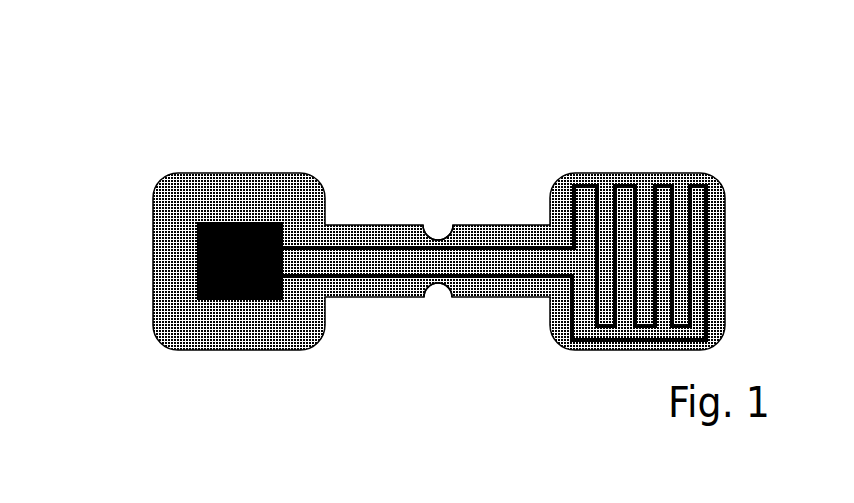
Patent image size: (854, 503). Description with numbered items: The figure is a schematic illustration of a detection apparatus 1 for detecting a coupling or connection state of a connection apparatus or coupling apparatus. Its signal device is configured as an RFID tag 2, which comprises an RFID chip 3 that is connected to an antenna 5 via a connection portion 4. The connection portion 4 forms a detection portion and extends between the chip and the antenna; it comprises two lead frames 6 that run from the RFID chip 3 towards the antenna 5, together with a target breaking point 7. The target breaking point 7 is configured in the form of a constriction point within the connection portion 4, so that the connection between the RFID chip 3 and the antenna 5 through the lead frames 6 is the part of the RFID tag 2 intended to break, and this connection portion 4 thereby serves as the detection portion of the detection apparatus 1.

The detection apparatus 1 is at (411, 237).
The RFID tag 2 is at (388, 179).
The RFID chip 3 is at (190, 330).
The connection portion 4 is at (502, 286).
The antenna 5 is at (715, 256).
The lead frames 6 is at (361, 246).
The target breaking point 7 is at (443, 215).